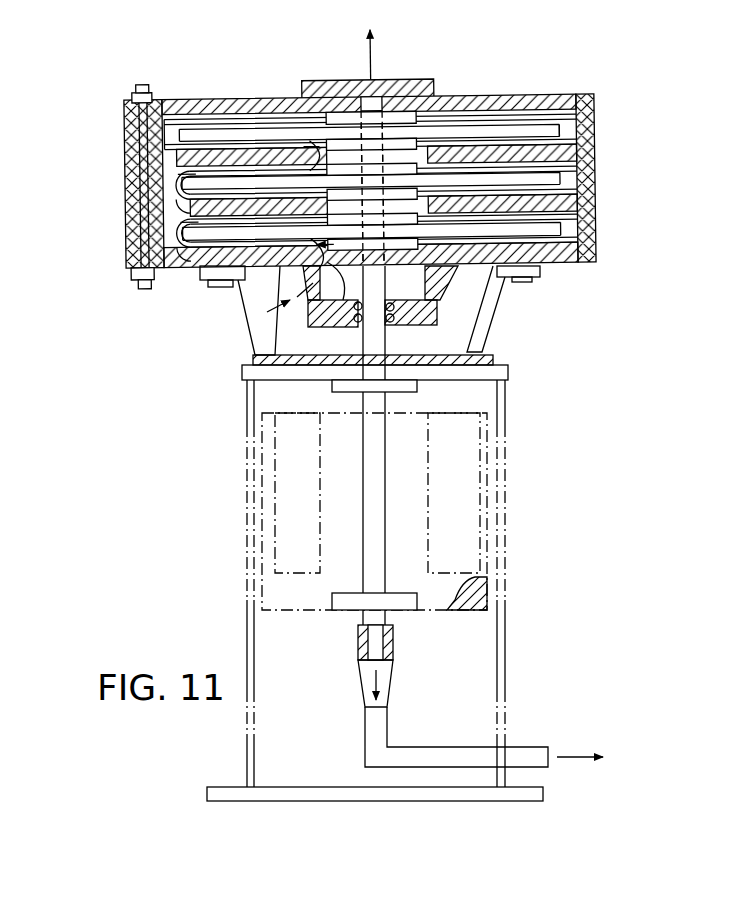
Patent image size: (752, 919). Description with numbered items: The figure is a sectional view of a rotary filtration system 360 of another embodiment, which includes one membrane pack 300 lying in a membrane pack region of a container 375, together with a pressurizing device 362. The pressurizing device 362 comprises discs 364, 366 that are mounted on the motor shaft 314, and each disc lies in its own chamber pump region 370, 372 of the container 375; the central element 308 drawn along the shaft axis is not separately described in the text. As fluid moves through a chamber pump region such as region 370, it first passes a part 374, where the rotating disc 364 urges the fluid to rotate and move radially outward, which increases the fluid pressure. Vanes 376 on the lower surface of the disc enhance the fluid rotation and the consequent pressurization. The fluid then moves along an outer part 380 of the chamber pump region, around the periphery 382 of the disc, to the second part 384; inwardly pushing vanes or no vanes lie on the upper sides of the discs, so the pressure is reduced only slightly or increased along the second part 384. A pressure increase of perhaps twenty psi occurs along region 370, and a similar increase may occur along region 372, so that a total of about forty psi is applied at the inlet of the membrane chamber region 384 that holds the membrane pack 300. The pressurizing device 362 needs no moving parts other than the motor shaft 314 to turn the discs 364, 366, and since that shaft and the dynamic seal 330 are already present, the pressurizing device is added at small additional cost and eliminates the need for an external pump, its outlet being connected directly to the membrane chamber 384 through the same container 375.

The system 360 is at (97, 135).
The container 375 is at (195, 96).
The membrane pack 300 is at (242, 127).
The shaft 308 is at (343, 157).
The second part 384 is at (568, 128).
The disc 366 is at (563, 150).
The chamber pump region 372 is at (577, 167).
The disc 364 is at (558, 217).
The chamber pump region 370 is at (573, 233).
The pressurizing device 362 is at (124, 170).
The vanes 376 is at (207, 220).
The outer part 380 is at (167, 235).
The periphery 382 is at (160, 275).
The part 374 is at (207, 247).
The dynamic seal 330 is at (395, 304).
The motor shaft 314 is at (390, 337).